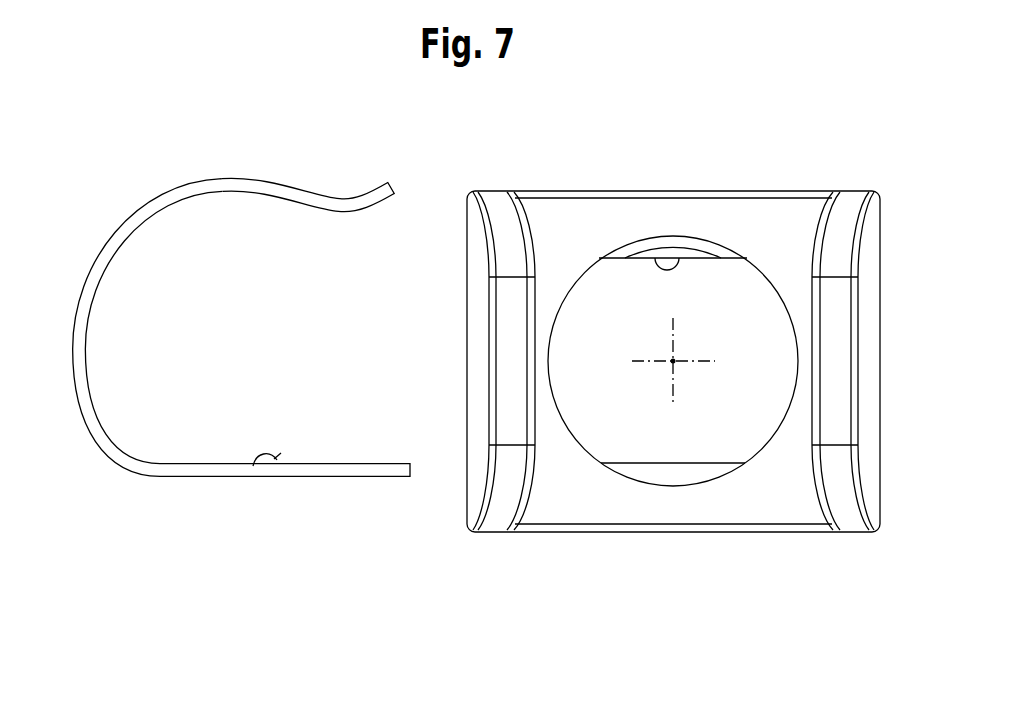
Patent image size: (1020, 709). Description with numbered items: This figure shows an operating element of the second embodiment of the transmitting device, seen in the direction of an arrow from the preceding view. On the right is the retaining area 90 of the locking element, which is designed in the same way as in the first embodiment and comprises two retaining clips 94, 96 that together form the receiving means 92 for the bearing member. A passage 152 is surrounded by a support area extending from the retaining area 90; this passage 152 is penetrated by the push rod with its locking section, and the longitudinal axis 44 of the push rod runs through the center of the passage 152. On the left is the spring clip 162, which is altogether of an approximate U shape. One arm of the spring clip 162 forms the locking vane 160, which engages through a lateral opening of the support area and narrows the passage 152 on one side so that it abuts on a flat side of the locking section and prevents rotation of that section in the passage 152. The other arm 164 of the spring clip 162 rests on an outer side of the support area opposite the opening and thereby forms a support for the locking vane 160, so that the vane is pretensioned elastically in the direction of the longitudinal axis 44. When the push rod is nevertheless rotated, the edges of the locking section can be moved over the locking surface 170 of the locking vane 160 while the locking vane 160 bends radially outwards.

The spring clip 162 is at (239, 331).
The other arm 164 is at (287, 191).
The locking surface 170 is at (253, 466).
The locking vane 160 is at (356, 472).
The retaining area 90 is at (674, 372).
The passage 152 is at (655, 257).
The receiving means 92 is at (570, 487).
The retaining clip 94 is at (512, 363).
The retaining clip 96 is at (835, 363).
The longitudinal axis 44 is at (672, 362).